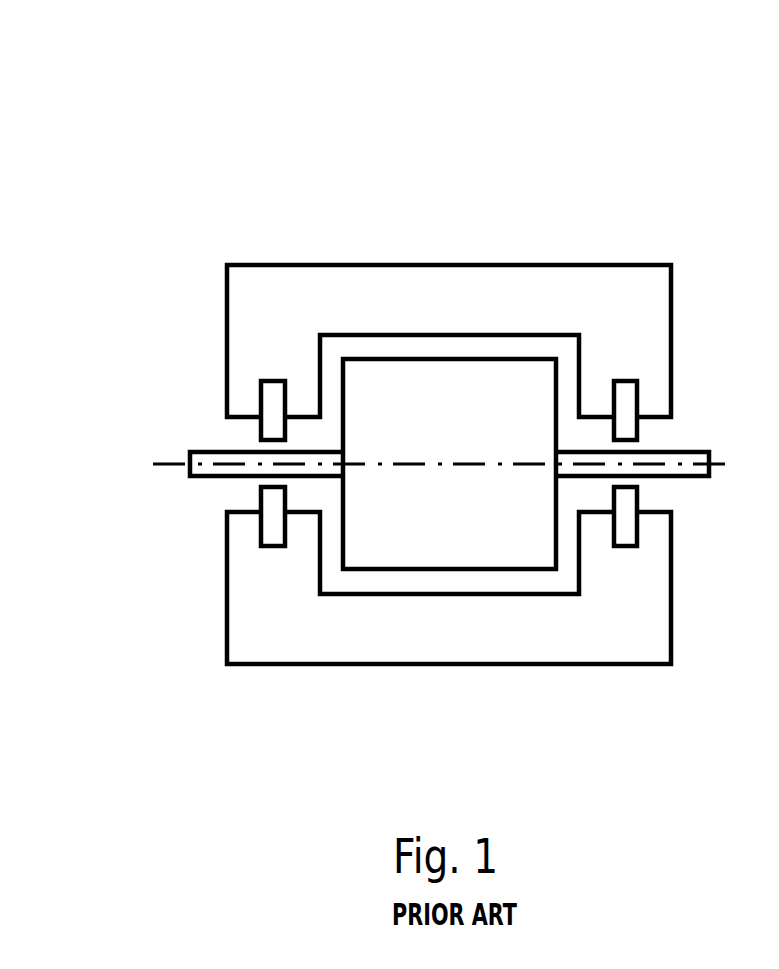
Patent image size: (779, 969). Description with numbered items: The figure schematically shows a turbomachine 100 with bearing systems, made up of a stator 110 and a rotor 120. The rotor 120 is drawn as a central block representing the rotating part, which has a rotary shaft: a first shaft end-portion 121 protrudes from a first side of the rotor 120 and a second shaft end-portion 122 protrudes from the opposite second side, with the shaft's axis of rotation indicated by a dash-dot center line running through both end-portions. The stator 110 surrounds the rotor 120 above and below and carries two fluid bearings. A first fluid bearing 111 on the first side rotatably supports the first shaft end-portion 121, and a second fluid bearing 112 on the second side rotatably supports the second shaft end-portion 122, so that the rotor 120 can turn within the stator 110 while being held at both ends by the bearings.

The turbomachine 100 is at (432, 195).
The stator 110 is at (504, 289).
The first fluid bearing 111 is at (270, 395).
The second fluid bearing 112 is at (622, 395).
The rotor 120 is at (462, 523).
The first shaft end-portion 121 is at (228, 466).
The second shaft end-portion 122 is at (670, 463).